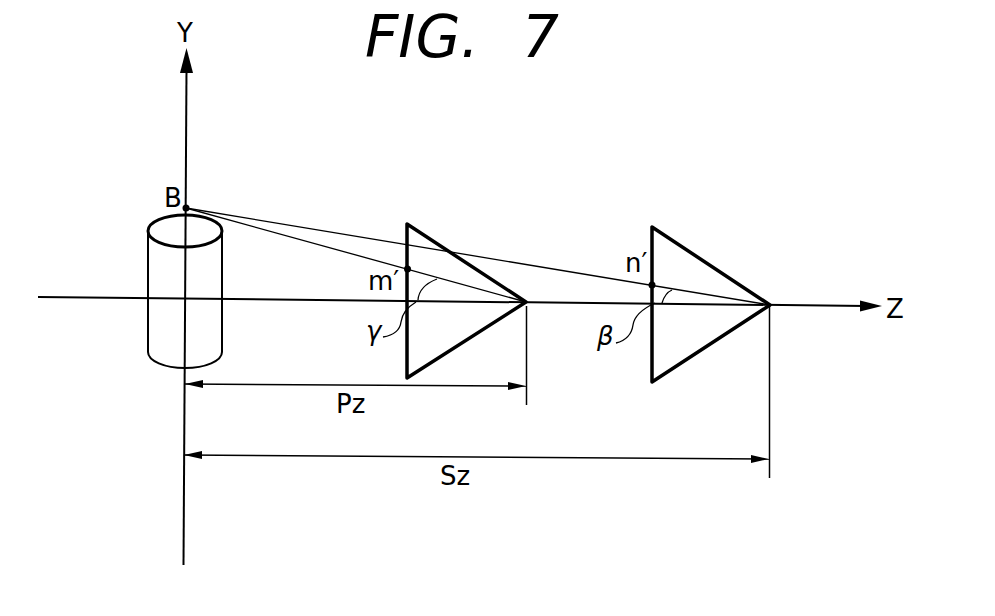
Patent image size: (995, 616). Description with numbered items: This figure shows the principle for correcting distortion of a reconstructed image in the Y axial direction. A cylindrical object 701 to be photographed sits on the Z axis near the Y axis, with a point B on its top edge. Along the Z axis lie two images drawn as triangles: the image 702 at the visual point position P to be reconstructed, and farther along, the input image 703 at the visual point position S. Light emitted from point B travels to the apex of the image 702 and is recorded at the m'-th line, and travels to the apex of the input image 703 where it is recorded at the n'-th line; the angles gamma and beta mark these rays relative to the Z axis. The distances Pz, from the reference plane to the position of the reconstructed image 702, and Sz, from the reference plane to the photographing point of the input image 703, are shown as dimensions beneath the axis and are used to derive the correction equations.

The object to be photographed 701 is at (148, 253).
The image at visual point position P to be reconstructed 702 is at (527, 301).
The input image at visual point position S 703 is at (770, 305).